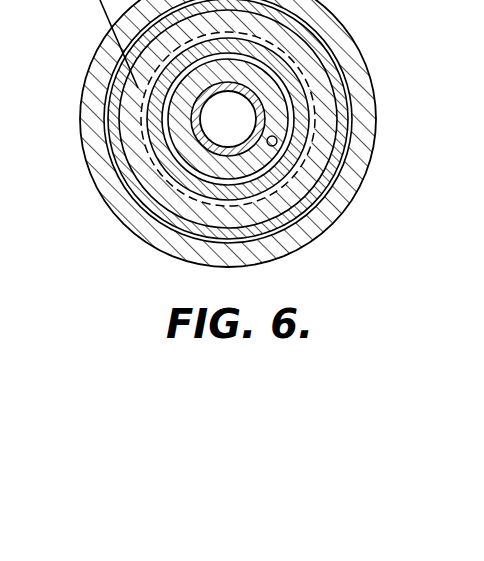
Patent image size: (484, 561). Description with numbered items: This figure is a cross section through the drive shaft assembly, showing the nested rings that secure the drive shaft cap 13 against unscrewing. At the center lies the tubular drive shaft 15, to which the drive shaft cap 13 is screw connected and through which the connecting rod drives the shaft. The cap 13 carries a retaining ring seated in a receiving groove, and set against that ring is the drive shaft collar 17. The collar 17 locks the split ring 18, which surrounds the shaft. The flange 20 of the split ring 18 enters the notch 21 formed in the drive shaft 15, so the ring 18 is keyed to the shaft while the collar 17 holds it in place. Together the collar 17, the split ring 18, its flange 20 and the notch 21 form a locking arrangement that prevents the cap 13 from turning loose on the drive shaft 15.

The drive shaft cap 13 is at (283, 112).
The tubular drive shaft 15 is at (267, 102).
The drive shaft collar 17 is at (330, 133).
The split ring 18 is at (135, 80).
The flange 20 is at (340, 158).
The notch 21 is at (300, 75).